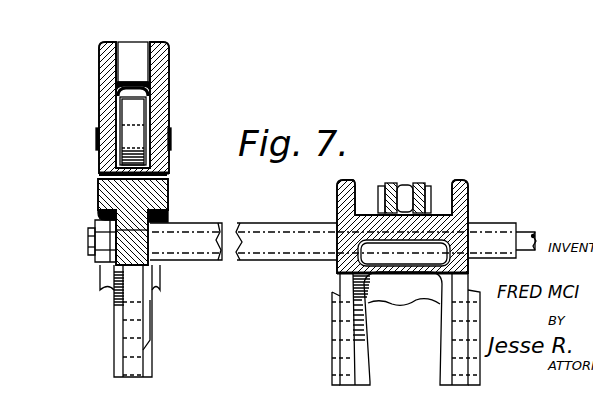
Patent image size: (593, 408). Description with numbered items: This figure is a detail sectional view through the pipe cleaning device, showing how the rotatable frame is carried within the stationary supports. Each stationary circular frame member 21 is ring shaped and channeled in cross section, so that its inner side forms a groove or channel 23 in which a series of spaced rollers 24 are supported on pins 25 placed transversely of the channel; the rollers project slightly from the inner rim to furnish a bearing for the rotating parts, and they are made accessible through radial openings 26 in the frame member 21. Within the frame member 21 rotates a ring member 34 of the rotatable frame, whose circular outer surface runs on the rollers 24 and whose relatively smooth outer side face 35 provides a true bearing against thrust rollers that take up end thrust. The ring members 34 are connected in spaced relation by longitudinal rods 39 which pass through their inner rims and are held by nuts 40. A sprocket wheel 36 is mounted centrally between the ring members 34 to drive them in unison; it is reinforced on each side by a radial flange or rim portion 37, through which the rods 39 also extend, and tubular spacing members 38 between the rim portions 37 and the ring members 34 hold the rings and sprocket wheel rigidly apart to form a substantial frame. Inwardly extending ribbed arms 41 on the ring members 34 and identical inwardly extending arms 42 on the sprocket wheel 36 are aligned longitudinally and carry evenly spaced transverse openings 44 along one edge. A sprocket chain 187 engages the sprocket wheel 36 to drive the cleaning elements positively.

The circular frame member 21 is at (100, 72).
The groove or channel 23 is at (134, 92).
The roller 24 is at (136, 108).
The pin 25 is at (172, 142).
The radial opening 26 is at (139, 50).
The ring member 34 is at (135, 193).
The outer side wall or face 35 is at (98, 205).
The sprocket wheel 36 is at (408, 183).
The radial flange or rim portion 37 is at (338, 191).
The tubular spacing member 38 is at (288, 262).
The longitudinal rod 39 is at (88, 243).
The nut 40 is at (100, 250).
The inwardly extending arm 41 is at (115, 328).
The inwardly extending arm 42 is at (335, 340).
The transversely extending opening 44 is at (133, 343).
The sprocket chain 187 is at (418, 186).